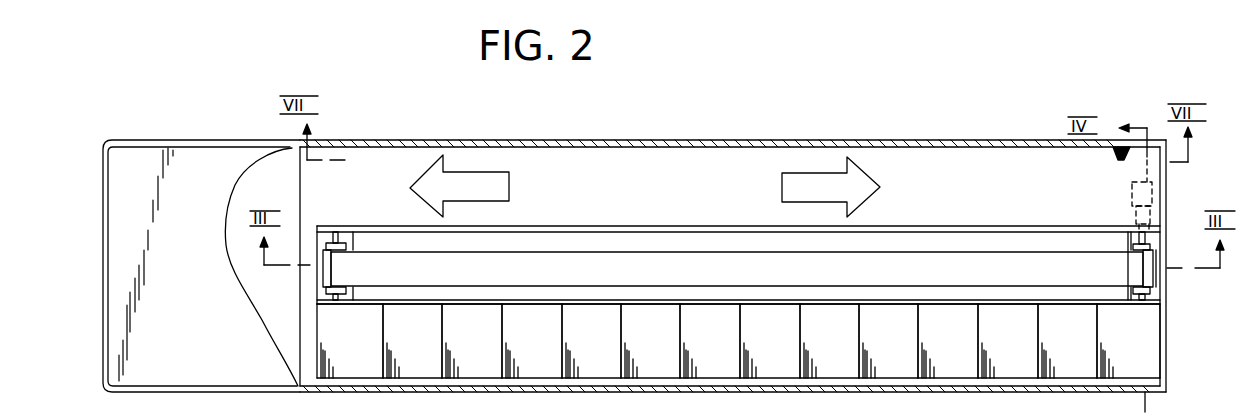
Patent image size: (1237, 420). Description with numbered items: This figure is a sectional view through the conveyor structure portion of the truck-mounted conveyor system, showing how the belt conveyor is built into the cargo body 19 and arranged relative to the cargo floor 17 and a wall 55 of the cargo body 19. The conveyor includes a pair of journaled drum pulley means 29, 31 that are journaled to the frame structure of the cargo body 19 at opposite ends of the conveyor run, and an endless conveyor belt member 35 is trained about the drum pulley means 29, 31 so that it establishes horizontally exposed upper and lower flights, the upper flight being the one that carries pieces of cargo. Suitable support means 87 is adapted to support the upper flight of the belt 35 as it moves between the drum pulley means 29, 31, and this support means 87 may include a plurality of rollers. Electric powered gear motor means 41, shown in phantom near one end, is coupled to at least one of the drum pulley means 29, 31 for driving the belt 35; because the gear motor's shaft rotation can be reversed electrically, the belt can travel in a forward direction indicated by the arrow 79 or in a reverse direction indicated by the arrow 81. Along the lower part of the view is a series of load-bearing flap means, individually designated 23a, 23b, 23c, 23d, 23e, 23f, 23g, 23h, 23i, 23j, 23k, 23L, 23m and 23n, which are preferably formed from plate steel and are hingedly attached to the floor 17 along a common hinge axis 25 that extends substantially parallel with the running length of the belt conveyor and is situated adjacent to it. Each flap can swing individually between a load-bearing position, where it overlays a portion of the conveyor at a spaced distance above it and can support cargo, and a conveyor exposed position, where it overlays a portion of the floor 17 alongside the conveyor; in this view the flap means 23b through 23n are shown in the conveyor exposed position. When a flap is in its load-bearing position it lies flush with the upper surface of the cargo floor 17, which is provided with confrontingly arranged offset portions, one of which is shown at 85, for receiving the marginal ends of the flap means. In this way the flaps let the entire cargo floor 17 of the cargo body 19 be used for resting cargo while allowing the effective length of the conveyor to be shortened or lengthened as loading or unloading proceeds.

The cargo floor 17 is at (963, 189).
The cargo body 19 is at (192, 334).
The load-bearing flap means 23a is at (363, 333).
The load-bearing flap means 23b is at (426, 333).
The load-bearing flap means 23c is at (485, 333).
The load-bearing flap means 23d is at (545, 333).
The load-bearing flap means 23e is at (605, 333).
The load-bearing flap means 23f is at (664, 333).
The load-bearing flap means 23g is at (723, 333).
The load-bearing flap means 23h is at (783, 333).
The load-bearing flap means 23i is at (843, 333).
The load-bearing flap means 23j is at (902, 333).
The load-bearing flap means 23k is at (963, 333).
The load-bearing flap means 23L is at (1023, 333).
The load-bearing flap means 23m is at (1084, 333).
The load-bearing flap means 23n is at (1142, 333).
The common hinge axis 25 is at (577, 303).
The journaled drum pulley means 29 is at (340, 233).
The journaled drum pulley means 31 is at (1160, 238).
The endless conveyor belt member 35 is at (808, 277).
The electric powered gear motor means 41 is at (1122, 197).
The wall 55 is at (875, 143).
The arrow 79 is at (490, 198).
The arrow 81 is at (822, 200).
The offset portion 85 is at (592, 230).
The support means 87 is at (692, 242).